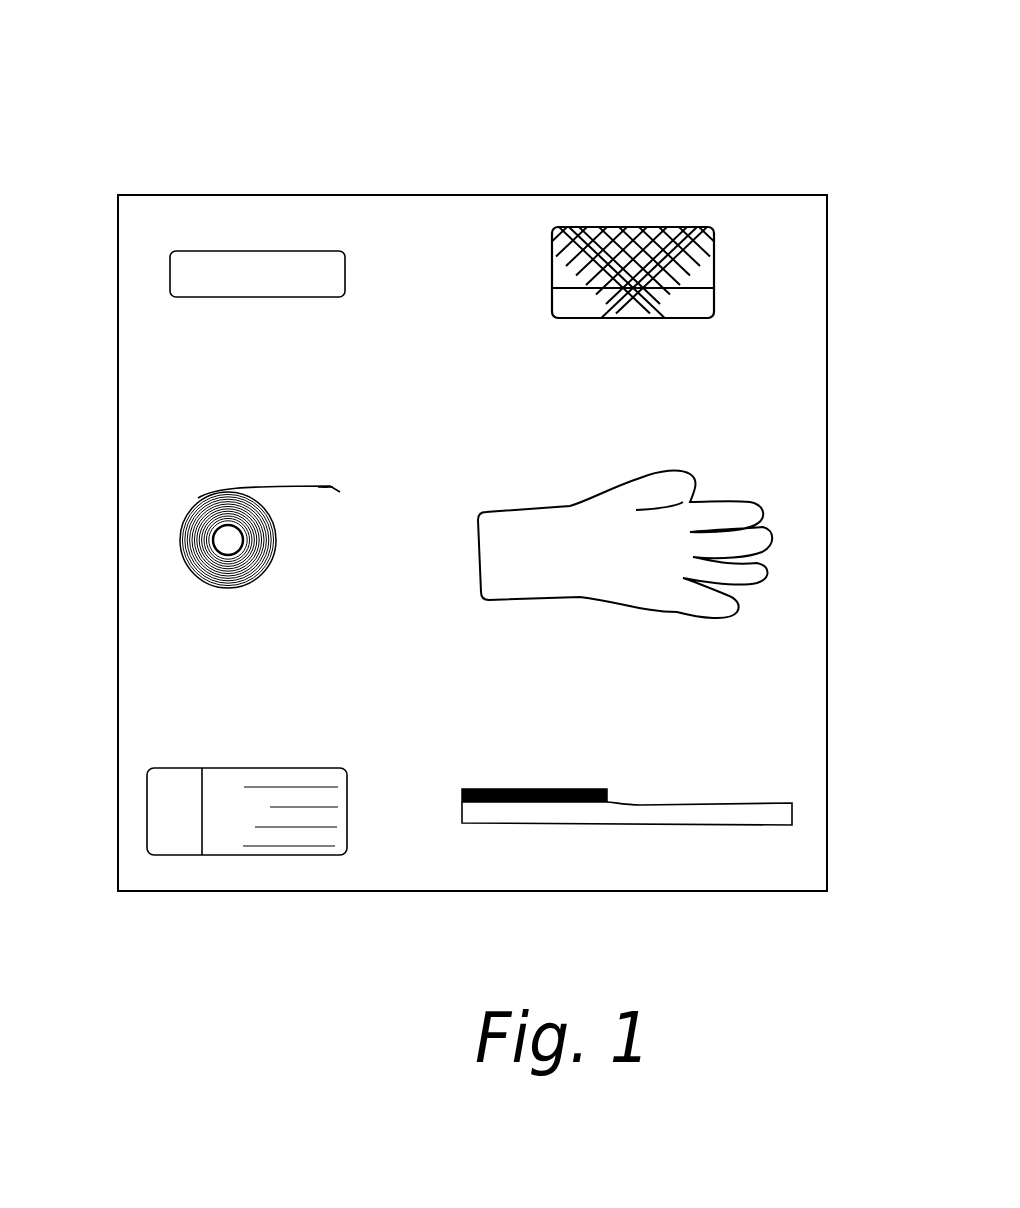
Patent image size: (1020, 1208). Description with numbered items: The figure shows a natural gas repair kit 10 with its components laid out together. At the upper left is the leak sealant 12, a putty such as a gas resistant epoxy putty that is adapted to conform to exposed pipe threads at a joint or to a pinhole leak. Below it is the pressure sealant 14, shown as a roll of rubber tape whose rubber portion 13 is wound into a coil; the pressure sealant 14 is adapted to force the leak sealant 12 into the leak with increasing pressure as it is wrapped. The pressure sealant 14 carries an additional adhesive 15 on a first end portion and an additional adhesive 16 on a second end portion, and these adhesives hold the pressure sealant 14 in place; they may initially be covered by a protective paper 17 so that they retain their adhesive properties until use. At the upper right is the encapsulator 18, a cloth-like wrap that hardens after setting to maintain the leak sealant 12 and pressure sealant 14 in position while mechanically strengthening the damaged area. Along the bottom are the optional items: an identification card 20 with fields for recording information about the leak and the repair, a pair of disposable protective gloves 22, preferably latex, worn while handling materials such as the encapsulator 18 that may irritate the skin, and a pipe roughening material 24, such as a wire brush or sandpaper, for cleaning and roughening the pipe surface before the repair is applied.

The natural gas repair kit 10 is at (622, 55).
The leak sealant 12 is at (186, 251).
The rubber portion 13 is at (260, 487).
The pressure sealant 14 is at (157, 533).
The additional adhesive 15 is at (231, 565).
The additional adhesive 16 is at (323, 488).
The protective paper 17 is at (323, 489).
The encapsulator 18 is at (687, 227).
The identification card 20 is at (165, 798).
The disposable protective gloves 22 is at (753, 512).
The pipe roughening material 24 is at (767, 812).